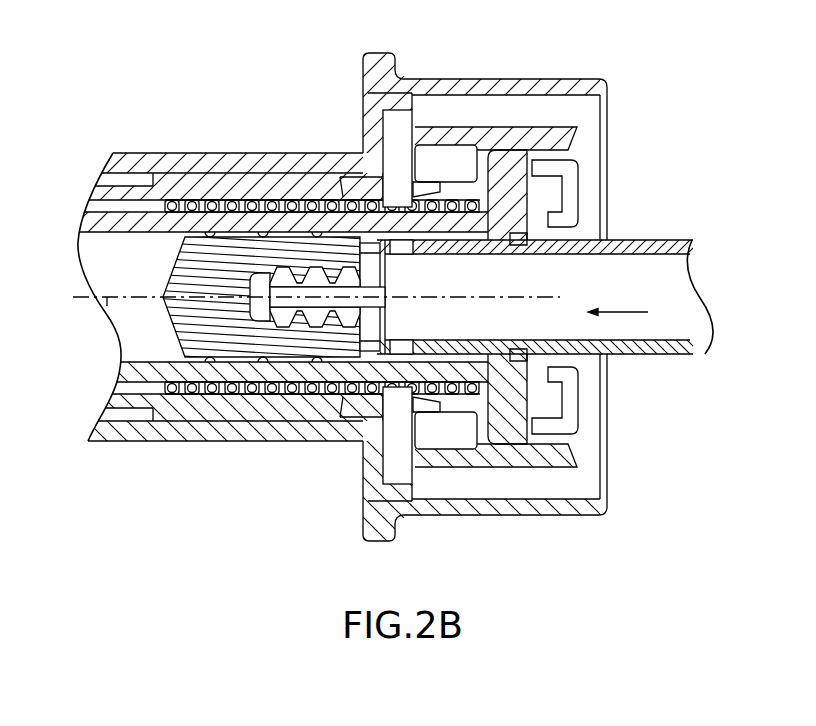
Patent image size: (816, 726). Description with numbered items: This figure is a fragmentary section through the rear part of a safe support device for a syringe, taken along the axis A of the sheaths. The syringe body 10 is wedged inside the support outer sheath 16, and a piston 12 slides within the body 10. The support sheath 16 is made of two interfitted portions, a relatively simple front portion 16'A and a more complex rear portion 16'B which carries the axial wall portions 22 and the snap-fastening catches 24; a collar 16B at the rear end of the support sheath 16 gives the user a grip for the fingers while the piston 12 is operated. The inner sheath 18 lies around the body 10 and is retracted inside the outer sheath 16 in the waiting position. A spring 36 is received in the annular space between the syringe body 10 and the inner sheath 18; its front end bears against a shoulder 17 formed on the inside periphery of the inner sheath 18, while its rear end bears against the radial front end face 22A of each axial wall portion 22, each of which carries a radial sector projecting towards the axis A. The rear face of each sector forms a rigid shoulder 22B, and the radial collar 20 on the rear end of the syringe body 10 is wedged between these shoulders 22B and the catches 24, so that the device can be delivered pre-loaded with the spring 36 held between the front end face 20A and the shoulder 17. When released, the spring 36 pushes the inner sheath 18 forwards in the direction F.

The syringe body 10 is at (125, 232).
The piston 12 is at (673, 297).
The support outer sheath 16 is at (408, 363).
The portion of support sheath 16'A is at (137, 261).
The portion of support sheath 16'B is at (595, 255).
The collar 16B is at (608, 78).
The shoulder 17 is at (128, 413).
The inner sheath 18 is at (193, 405).
The radial collar 20 is at (520, 423).
The front end face 20A is at (462, 200).
The axial wall portion 22 is at (557, 137).
The radial front end face 22A is at (468, 197).
The rigid shoulder 22B is at (520, 200).
The snap-fastening catches 24 is at (570, 200).
The spring 36 is at (260, 392).
The axis A is at (107, 313).
The direction F is at (618, 301).